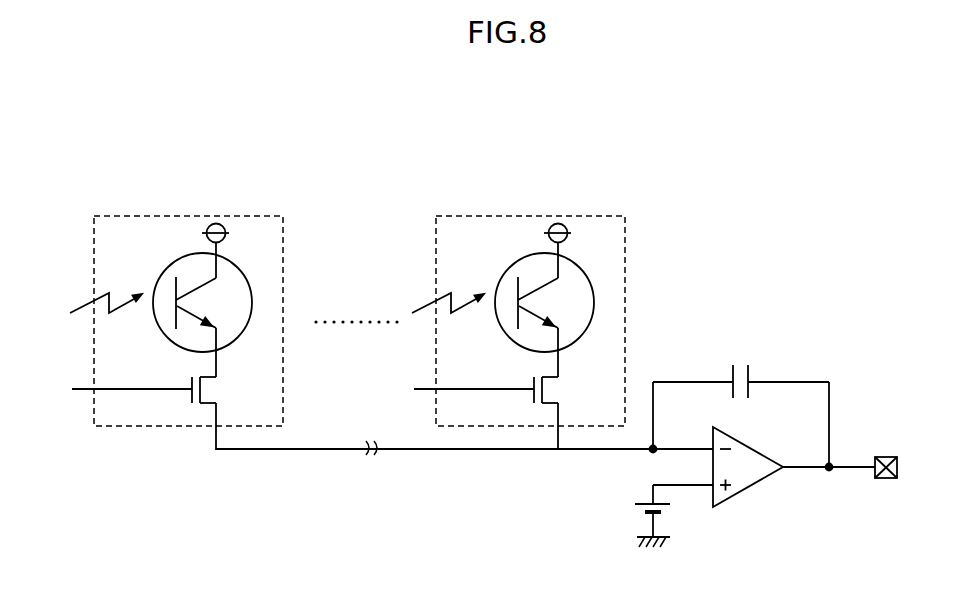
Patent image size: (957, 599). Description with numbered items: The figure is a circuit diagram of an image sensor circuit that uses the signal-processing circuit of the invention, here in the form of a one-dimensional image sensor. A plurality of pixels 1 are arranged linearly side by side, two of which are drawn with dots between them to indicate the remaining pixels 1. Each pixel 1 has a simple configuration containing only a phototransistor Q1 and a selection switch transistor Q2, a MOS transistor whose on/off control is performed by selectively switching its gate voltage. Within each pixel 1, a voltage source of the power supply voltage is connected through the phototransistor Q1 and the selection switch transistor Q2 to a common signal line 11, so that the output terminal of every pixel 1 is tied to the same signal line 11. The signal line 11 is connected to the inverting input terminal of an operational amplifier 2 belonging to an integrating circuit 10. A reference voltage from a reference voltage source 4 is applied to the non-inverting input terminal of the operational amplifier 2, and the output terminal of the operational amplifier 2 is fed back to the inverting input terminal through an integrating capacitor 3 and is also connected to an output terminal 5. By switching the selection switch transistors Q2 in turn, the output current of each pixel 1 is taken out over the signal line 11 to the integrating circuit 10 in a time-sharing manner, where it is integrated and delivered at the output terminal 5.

The pixel 1 is at (283, 260).
The phototransistor Q1 is at (252, 298).
The selection switch transistor Q2 is at (330, 413).
The signal line 11 is at (460, 450).
The integrating circuit 10 is at (694, 420).
The operational amplifier 2 is at (752, 443).
The integrating capacitor 3 is at (748, 370).
The reference voltage source 4 is at (640, 502).
The output terminal 5 is at (887, 455).